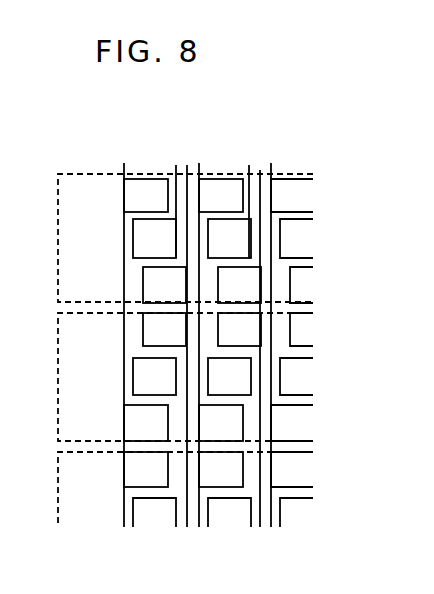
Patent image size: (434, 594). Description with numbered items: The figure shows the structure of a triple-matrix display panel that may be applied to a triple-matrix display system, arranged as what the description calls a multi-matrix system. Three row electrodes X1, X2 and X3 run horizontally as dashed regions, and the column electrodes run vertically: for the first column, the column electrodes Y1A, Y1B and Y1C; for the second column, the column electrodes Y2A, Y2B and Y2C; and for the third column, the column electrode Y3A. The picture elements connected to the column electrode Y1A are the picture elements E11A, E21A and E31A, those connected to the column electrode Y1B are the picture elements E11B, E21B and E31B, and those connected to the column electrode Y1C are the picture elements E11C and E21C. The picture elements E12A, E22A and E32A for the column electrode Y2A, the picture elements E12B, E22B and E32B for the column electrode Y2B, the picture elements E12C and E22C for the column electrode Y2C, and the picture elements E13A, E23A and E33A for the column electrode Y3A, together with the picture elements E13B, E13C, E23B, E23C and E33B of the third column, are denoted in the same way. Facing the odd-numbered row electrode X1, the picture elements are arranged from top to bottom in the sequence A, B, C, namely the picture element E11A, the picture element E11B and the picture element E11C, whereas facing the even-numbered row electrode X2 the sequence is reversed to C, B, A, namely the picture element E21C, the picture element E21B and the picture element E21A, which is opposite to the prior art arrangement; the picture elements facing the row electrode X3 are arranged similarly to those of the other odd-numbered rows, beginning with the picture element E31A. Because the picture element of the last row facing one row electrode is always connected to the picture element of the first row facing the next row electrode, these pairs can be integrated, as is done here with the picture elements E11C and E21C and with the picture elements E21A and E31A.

The column electrode Y1A is at (124, 163).
The column electrode Y1B is at (176, 165).
The column electrode Y1C is at (187, 165).
The column electrode Y2A is at (199, 163).
The column electrode Y2B is at (249, 165).
The column electrode Y2C is at (260, 170).
The column electrode Y3A is at (271, 163).
The row electrode X1 is at (58, 255).
The row electrode X2 is at (58, 393).
The row electrode X3 is at (58, 511).
The picture element E11A is at (147, 195).
The picture element E11B is at (156, 238).
The picture element E11C is at (166, 285).
The picture element E12A is at (222, 195).
The picture element E12B is at (231, 238).
The picture element E12C is at (241, 285).
The picture element E13A is at (294, 195).
The picture element E13B is at (303, 238).
The picture element E13C is at (313, 285).
The picture element E21A is at (147, 423).
The picture element E21B is at (156, 376).
The picture element E21C is at (166, 329).
The picture element E22A is at (222, 423).
The picture element E22B is at (231, 376).
The picture element E22C is at (241, 329).
The picture element E23A is at (294, 423).
The picture element E23B is at (303, 376).
The picture element E23C is at (313, 329).
The picture element E31A is at (147, 469).
The picture element E31B is at (156, 512).
The picture element E32A is at (222, 469).
The picture element E32B is at (231, 512).
The picture element E33A is at (294, 469).
The picture element E33B is at (303, 512).